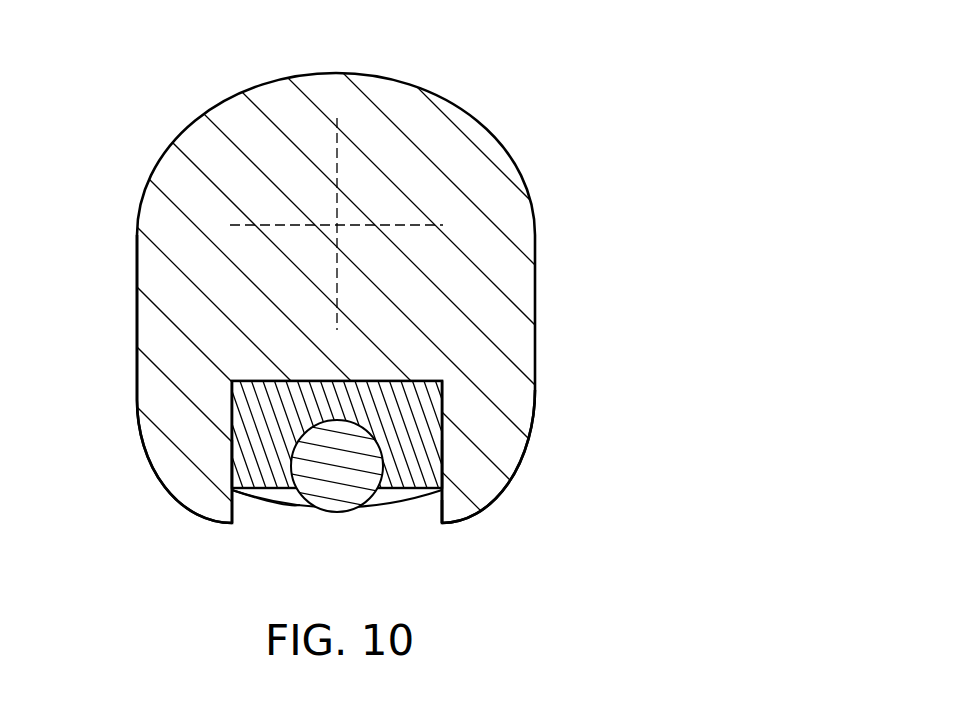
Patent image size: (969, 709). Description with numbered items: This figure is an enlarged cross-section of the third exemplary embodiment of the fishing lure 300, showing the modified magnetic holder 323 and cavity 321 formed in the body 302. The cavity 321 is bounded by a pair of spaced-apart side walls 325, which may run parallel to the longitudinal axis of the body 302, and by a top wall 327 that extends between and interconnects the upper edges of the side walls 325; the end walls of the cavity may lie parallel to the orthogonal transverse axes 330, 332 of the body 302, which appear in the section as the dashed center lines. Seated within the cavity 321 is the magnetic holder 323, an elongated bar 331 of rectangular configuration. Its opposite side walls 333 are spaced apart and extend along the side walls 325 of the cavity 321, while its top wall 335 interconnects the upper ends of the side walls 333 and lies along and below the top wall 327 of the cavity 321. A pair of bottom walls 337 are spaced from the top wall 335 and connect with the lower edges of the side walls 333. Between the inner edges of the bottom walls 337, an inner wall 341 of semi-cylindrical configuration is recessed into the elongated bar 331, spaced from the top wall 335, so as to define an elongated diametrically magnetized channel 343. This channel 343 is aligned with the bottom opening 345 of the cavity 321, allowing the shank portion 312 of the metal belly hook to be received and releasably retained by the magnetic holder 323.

The fishing lure 300 is at (540, 66).
The body 302 is at (541, 207).
The shank portion 312 is at (340, 493).
The cavity 321 is at (192, 476).
The magnetic holder 323 is at (473, 484).
The side walls 325 is at (344, 425).
The top wall 327 is at (407, 389).
The transverse axis 330 is at (407, 174).
The elongated bar 331 is at (514, 455).
The transverse axis 332 is at (420, 190).
The opposite side walls 333 is at (149, 445).
The top wall 335 is at (150, 317).
The bottom walls 337 is at (335, 482).
The inner wall 341 is at (418, 423).
The diametrically magnetized channel 343 is at (251, 534).
The bottom opening 345 is at (474, 524).